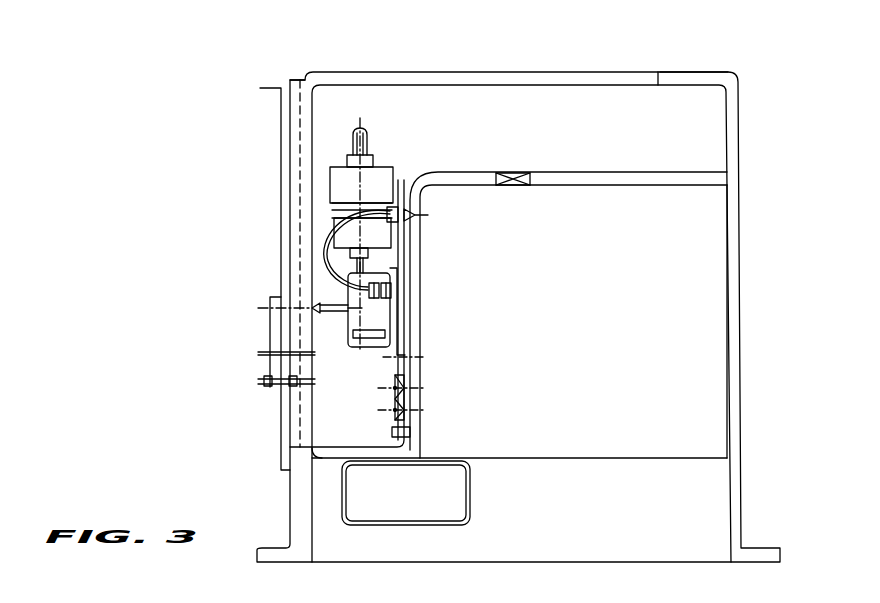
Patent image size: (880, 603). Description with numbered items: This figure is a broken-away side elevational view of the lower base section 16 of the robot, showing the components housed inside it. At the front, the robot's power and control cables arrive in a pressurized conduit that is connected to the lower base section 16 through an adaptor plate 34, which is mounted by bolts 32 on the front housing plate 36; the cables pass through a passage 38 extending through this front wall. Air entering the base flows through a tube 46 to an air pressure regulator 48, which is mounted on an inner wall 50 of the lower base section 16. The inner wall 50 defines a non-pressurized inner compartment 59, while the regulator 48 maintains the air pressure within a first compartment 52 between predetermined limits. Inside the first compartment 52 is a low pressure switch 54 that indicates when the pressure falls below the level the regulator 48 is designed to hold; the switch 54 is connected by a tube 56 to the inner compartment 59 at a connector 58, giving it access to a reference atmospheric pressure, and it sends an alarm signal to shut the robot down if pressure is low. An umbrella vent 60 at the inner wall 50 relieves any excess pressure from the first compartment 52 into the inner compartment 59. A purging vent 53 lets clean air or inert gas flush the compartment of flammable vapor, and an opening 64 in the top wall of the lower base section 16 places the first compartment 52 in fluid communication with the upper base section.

The lower base section 16 is at (738, 285).
The bolts 32 is at (265, 385).
The adaptor plate 34 is at (270, 298).
The front housing plate 36 is at (281, 178).
The passage 38 is at (296, 382).
The tube 46 is at (310, 300).
The air pressure regulator 48 is at (380, 167).
The inner wall 50 is at (418, 270).
The first compartment 52 is at (722, 97).
The purging vent 53 is at (500, 186).
The low pressure switch 54 is at (395, 304).
The tube 56 is at (322, 240).
The connector 58 is at (416, 182).
The inner compartment 59 is at (726, 325).
The umbrella vent 60 is at (405, 392).
The opening 64 is at (380, 81).